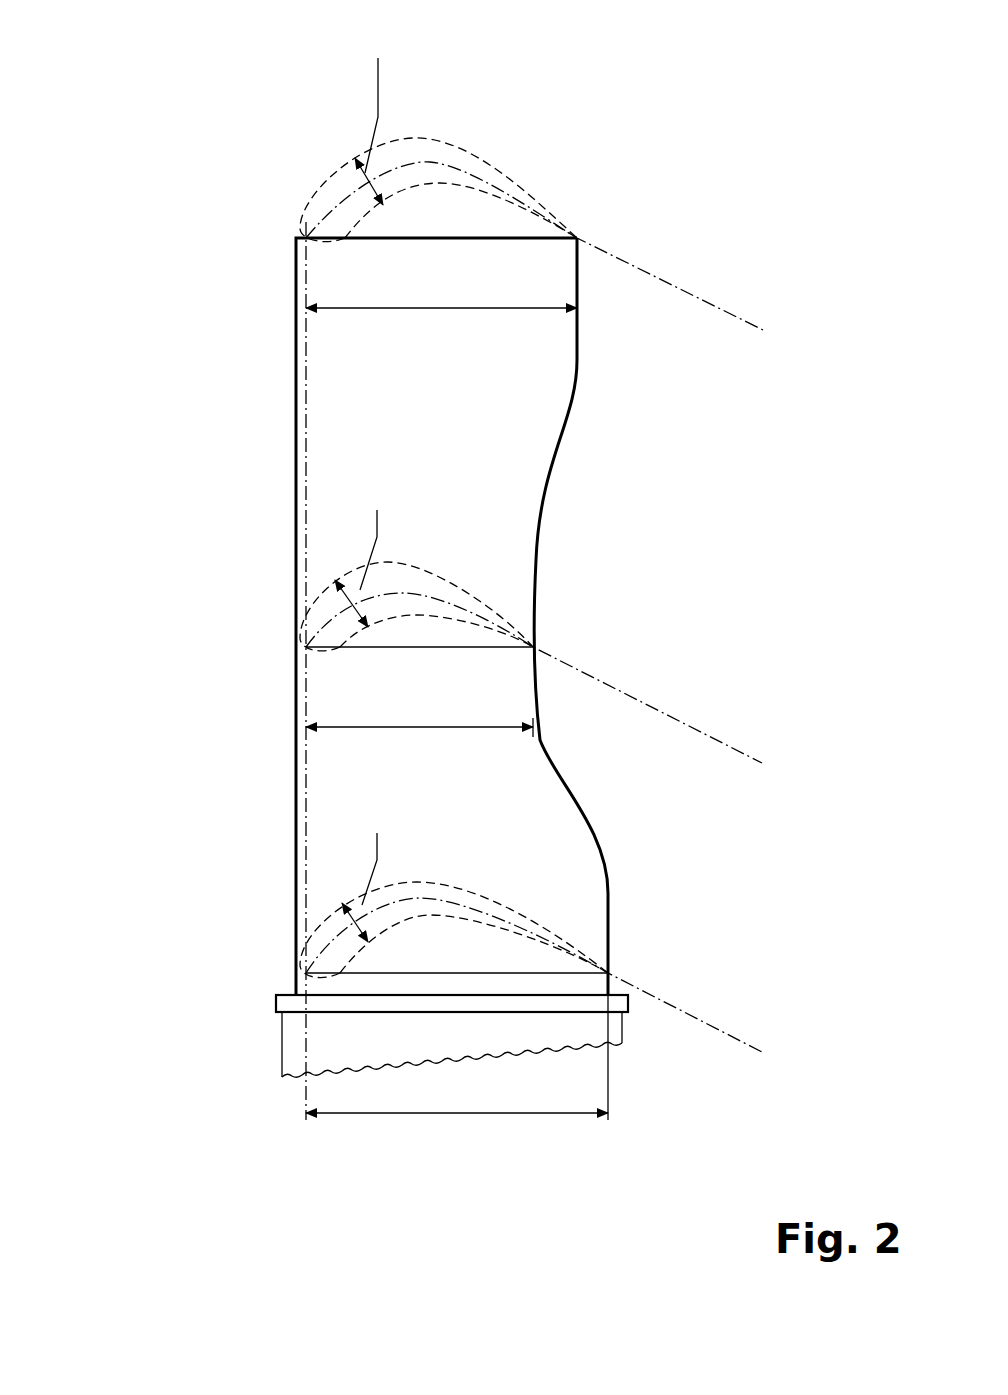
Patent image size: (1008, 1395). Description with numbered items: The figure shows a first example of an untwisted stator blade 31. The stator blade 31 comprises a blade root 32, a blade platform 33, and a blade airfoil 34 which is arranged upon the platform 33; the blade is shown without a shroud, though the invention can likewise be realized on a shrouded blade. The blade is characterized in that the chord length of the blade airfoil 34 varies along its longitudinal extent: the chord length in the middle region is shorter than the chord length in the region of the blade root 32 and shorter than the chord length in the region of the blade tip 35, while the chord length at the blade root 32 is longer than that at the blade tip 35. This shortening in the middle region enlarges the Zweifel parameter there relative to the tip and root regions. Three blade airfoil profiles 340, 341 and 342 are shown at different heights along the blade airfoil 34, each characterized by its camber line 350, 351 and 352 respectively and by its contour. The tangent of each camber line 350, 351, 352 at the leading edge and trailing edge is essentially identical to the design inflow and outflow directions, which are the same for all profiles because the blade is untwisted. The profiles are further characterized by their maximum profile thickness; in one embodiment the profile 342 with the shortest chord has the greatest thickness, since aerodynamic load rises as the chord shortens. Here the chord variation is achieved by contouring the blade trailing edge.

The stator blade 31 is at (205, 523).
The blade root 32 is at (383, 1040).
The blade platform 33 is at (545, 1002).
The blade airfoil 34 is at (320, 795).
The blade tip 35 is at (471, 238).
The blade airfoil profile 340 is at (487, 892).
The blade airfoil profile 341 is at (507, 178).
The blade airfoil profile 342 is at (423, 570).
The camber line 350 is at (515, 920).
The camber line 351 is at (515, 195).
The camber line 352 is at (440, 597).